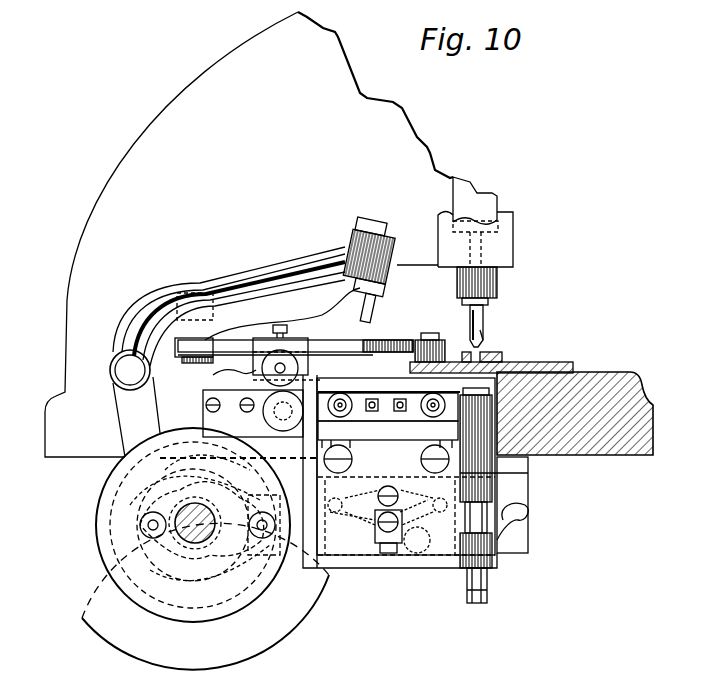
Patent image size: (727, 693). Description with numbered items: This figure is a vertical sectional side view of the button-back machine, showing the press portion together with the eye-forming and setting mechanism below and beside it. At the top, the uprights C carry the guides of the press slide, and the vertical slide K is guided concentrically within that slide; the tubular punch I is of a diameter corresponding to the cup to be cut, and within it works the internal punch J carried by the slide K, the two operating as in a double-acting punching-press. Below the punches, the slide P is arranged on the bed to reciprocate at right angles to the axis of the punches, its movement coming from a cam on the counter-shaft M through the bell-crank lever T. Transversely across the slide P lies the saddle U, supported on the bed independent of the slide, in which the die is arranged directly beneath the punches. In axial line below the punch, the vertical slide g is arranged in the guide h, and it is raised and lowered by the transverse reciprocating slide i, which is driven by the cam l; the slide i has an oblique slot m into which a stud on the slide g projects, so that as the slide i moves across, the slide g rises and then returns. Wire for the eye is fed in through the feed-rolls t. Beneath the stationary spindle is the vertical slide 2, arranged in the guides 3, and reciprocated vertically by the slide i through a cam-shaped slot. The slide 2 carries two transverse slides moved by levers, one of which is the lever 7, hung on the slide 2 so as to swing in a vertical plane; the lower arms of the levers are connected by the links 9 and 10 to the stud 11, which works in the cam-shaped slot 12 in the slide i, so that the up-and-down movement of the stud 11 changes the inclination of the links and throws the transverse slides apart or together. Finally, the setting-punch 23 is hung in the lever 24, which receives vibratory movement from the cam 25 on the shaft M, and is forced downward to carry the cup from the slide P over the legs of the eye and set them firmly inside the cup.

The uprights C is at (249, 234).
The vertical slide K is at (475, 222).
The tubular punch I is at (484, 318).
The punch J is at (484, 335).
The saddle U is at (490, 352).
The slide P is at (491, 358).
The vertical slide g is at (575, 413).
The bell-crank lever T is at (294, 344).
The nut n is at (430, 347).
The feed-rolls t is at (261, 381).
The vertical slide 2 is at (400, 471).
The link 9 is at (394, 519).
The guides 3 is at (354, 505).
The lever 7 is at (423, 505).
The cam-shaped slot 12 is at (417, 540).
The link 10 is at (352, 518).
The stud 11 is at (414, 504).
The guide h is at (476, 495).
The transverse reciprocating slide i is at (494, 505).
The oblique slot m is at (512, 521).
The lever 24 is at (227, 352).
The setting-punch 23 is at (369, 271).
The cam l is at (208, 525).
The outer wheel s is at (202, 596).
The counter-shaft M is at (195, 523).
The cam 25 is at (202, 518).